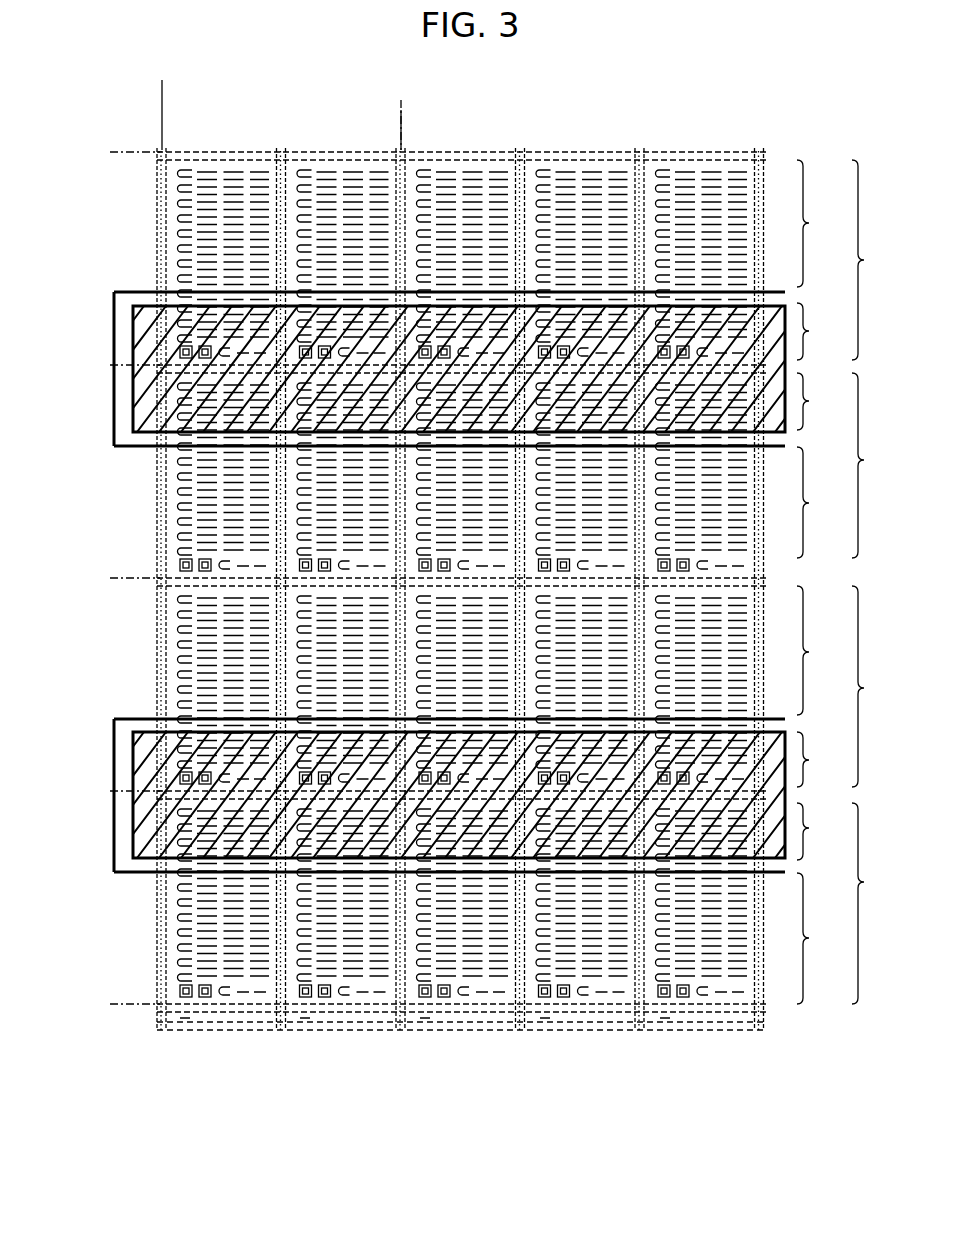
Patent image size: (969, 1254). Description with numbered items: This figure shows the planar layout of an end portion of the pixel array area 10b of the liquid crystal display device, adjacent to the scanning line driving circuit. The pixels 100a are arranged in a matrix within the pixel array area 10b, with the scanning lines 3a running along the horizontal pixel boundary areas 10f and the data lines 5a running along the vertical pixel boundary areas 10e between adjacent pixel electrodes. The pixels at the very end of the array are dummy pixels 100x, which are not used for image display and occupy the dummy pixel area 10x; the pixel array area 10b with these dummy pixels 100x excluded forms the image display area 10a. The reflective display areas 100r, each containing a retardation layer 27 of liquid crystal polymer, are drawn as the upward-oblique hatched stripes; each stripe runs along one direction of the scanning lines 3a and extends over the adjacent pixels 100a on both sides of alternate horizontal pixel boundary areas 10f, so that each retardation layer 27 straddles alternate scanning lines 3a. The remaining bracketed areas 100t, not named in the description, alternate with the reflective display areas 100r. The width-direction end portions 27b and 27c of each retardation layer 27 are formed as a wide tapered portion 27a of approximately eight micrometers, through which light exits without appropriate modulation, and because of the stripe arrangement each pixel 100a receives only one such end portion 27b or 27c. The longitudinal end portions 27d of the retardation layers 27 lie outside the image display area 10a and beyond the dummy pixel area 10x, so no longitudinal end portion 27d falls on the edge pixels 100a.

The scanning line 3a is at (134, 152).
The data line 5a is at (198, 1012).
The image display area 10a is at (403, 120).
The pixel array area 10b is at (164, 88).
The dummy pixel area 10x is at (399, 120).
The vertical pixel boundary area 10e is at (162, 1042).
The horizontal pixel boundary area 10f is at (108, 157).
The retardation layer 27 is at (153, 293).
The tapered portion 27a is at (128, 326).
The end portion of retardation layer 27b is at (205, 302).
The end portion of retardation layer 27c is at (190, 450).
The longitudinal end portion of retardation layer 27d is at (128, 412).
The pixel 100a is at (492, 210).
The pixel region 100t is at (829, 510).
The reflective display area 100r is at (829, 653).
The dummy pixel 100x is at (300, 500).